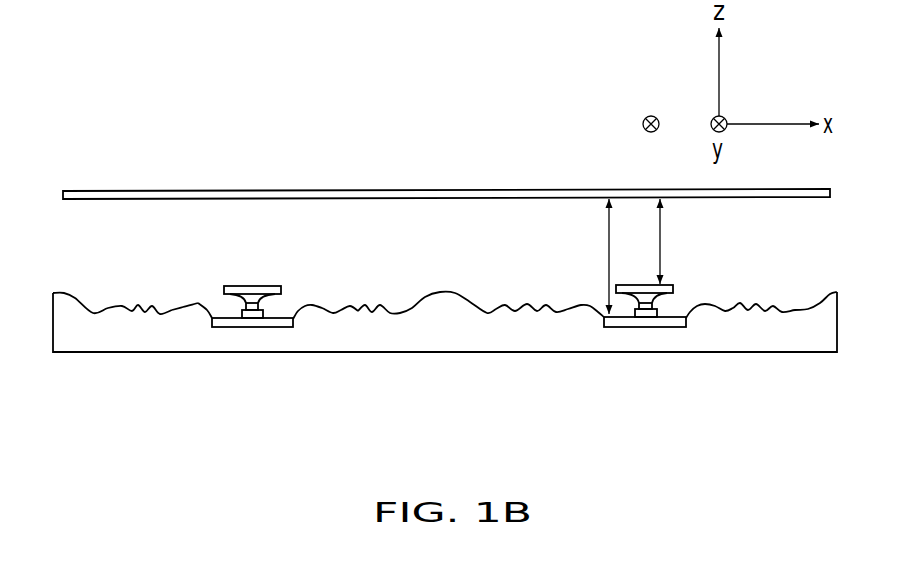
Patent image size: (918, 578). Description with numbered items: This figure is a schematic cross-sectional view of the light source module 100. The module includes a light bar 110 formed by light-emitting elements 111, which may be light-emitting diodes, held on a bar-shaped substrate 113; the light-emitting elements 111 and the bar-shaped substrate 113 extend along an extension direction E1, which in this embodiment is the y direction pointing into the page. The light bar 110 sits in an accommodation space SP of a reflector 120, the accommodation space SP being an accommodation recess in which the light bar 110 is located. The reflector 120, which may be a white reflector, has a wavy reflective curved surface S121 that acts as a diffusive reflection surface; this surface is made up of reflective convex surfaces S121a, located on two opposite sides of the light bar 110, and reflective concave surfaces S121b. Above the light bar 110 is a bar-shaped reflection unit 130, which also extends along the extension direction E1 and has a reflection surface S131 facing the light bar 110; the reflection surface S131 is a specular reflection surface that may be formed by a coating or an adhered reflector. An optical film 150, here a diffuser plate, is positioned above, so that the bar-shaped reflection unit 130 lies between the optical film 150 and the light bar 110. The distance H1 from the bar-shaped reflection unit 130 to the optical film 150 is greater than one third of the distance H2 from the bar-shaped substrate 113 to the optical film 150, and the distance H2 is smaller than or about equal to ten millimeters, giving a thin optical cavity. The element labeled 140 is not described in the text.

The light source module 100 is at (445, 300).
The light bar 110 is at (224, 379).
The light-emitting elements 111 is at (253, 319).
The bar-shaped substrate 113 is at (225, 328).
The reflector 120 is at (445, 313).
The bar-shaped reflection unit 130 is at (229, 258).
The adhesive 140 is at (265, 307).
The optical film 150 is at (133, 194).
The wavy reflective curved surface S121 is at (445, 261).
The reflective convex surfaces S121a is at (196, 305).
The reflective concave surfaces S121b is at (412, 307).
The reflection surface S131 is at (232, 301).
The accommodation space SP is at (214, 305).
The distance from the bar-shaped reflection unit to the optical film H1 is at (676, 241).
The distance from the bar-shaped substrate to the optical film H2 is at (625, 256).
The extension direction E1 is at (654, 142).